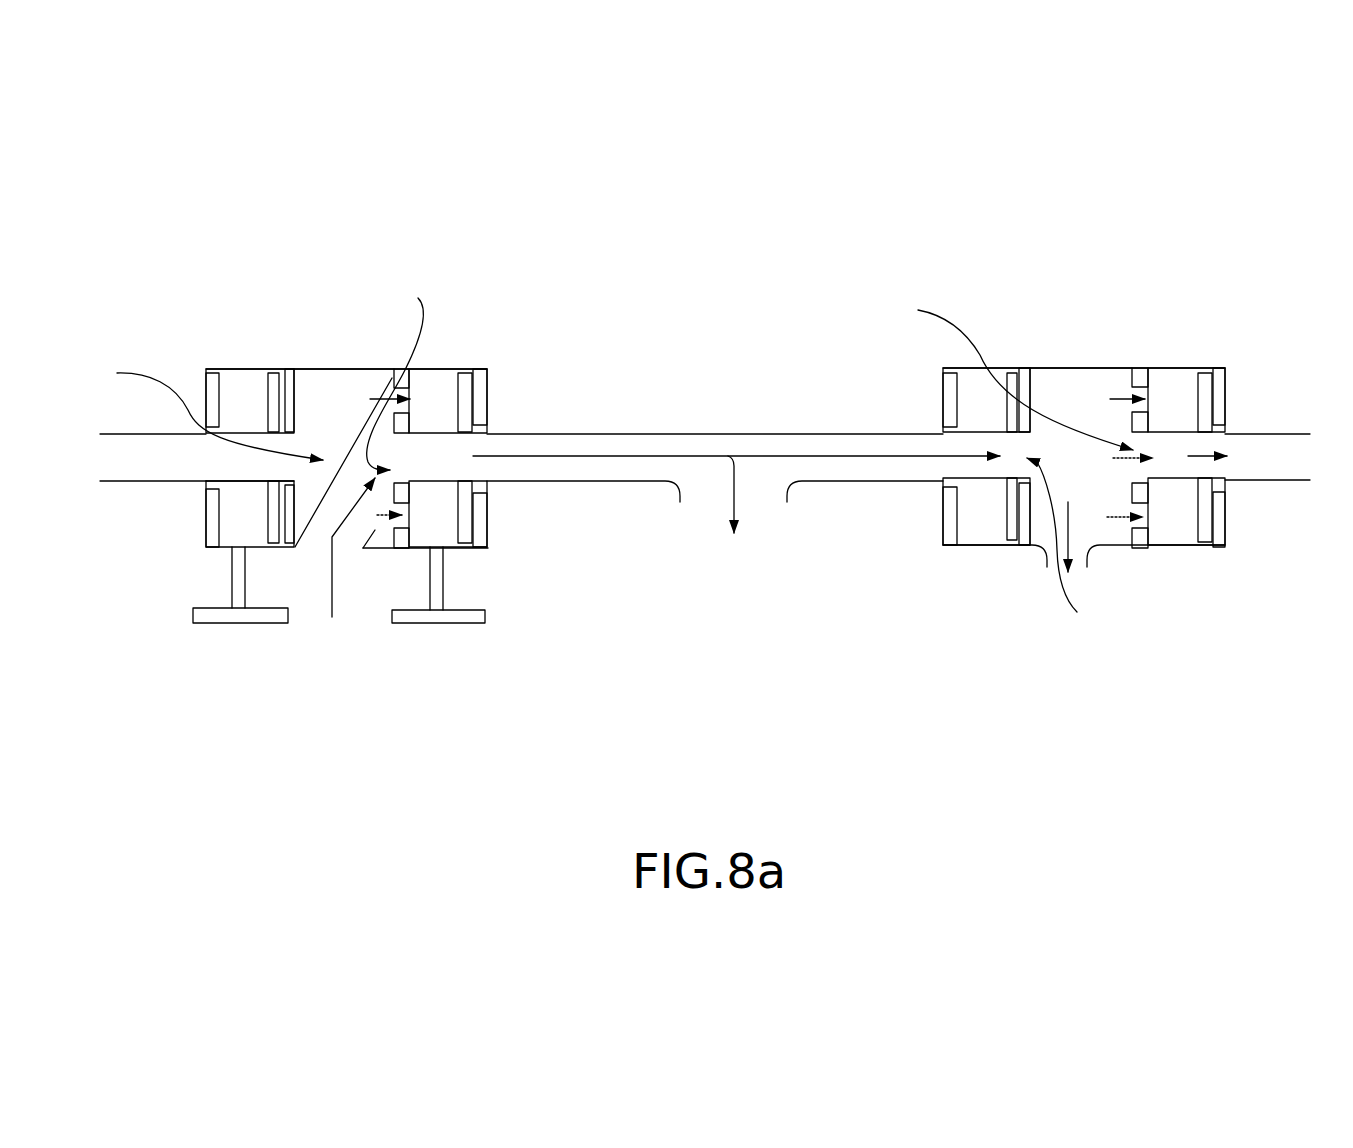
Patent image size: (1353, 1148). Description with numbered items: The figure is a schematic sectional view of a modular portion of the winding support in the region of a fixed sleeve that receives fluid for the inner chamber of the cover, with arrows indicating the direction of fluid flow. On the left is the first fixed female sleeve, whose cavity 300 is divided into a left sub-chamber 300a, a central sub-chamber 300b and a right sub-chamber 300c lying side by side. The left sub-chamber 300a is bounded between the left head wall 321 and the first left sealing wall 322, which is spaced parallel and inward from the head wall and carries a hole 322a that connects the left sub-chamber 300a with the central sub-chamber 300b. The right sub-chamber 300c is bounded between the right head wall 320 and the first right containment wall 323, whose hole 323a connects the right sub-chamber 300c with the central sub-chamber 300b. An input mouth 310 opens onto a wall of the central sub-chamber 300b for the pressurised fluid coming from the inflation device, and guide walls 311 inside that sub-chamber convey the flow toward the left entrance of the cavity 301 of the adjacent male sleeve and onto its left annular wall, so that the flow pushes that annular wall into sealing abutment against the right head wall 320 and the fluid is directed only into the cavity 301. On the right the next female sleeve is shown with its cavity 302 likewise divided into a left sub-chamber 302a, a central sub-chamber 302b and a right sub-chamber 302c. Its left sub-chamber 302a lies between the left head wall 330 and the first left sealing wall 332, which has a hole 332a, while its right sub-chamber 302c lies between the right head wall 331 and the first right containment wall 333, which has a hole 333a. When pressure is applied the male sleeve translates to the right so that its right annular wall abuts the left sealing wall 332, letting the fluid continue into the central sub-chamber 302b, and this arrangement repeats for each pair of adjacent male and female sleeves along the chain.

The cavity 300 is at (277, 418).
The left sub-chamber 300a is at (248, 388).
The central sub-chamber 300b is at (333, 392).
The right sub-chamber 300c is at (444, 385).
The cavity 301 is at (830, 463).
The cavity 302 is at (1087, 478).
The left sub-chamber 302a is at (982, 507).
The central sub-chamber 302b is at (1075, 395).
The right sub-chamber 302c is at (1183, 390).
The input mouth 310 is at (324, 550).
The guide walls 311 is at (366, 545).
The right head wall 320 is at (468, 523).
The left head wall 321 is at (222, 528).
The first left sealing wall 322 is at (290, 383).
The hole 322a is at (262, 468).
The first right containment wall 323 is at (403, 538).
The hole 323a is at (389, 376).
The left head wall 330 is at (960, 535).
The right head wall 331 is at (1220, 527).
The first left sealing wall 332 is at (1023, 540).
The hole 332a is at (1088, 545).
The first right containment wall 333 is at (1135, 380).
The hole 333a is at (994, 371).